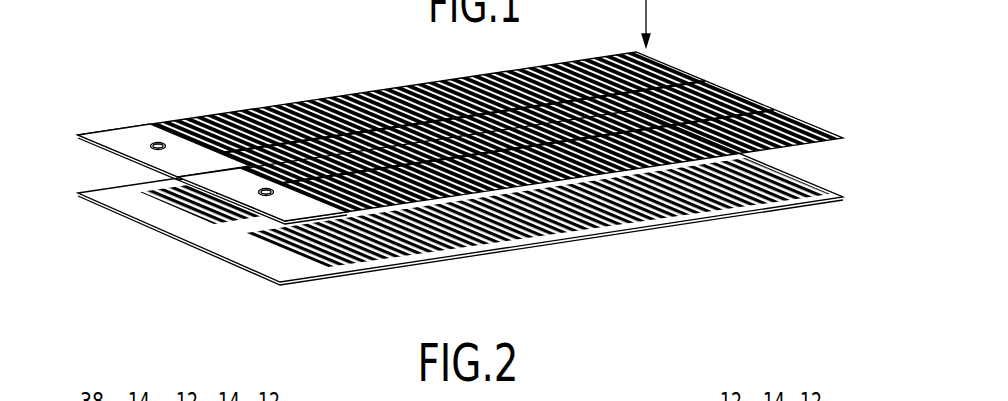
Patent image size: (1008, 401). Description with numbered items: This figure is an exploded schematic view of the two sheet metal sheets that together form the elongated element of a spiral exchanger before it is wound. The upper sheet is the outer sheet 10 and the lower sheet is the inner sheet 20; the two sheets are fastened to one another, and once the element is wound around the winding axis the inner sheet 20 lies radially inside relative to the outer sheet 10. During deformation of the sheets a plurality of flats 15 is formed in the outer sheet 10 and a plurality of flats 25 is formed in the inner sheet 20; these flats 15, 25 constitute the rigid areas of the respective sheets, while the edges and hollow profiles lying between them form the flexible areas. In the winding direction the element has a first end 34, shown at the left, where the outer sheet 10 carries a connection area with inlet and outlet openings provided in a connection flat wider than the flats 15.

The outer sheet 10 is at (447, 112).
The flats 15 is at (257, 107).
The inner sheet 20 is at (460, 219).
The flats 25 is at (297, 253).
The first end 34 is at (121, 88).